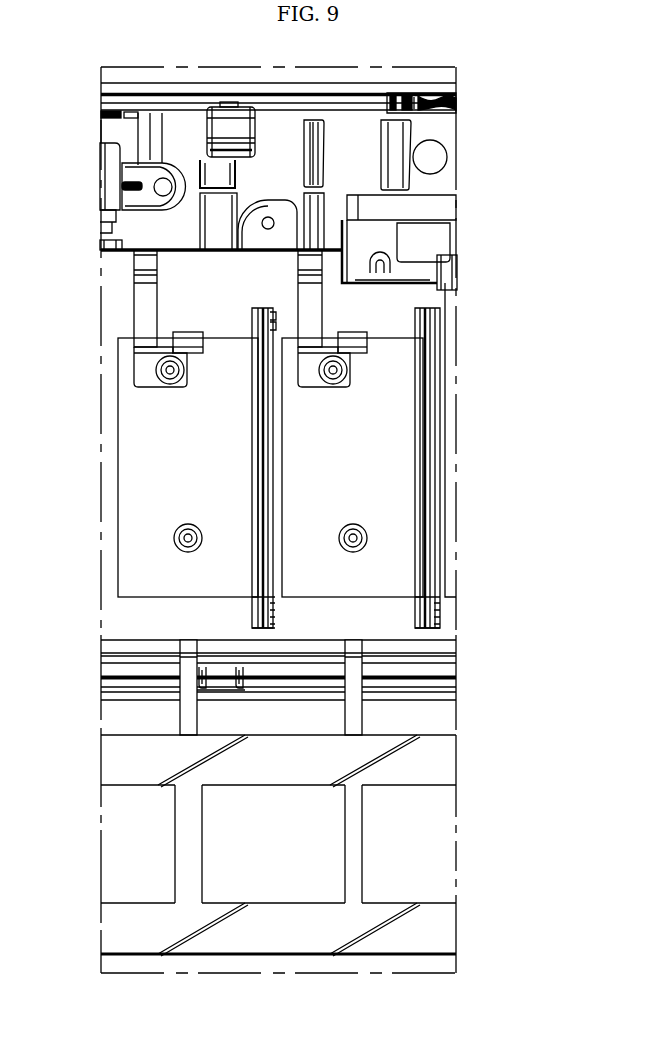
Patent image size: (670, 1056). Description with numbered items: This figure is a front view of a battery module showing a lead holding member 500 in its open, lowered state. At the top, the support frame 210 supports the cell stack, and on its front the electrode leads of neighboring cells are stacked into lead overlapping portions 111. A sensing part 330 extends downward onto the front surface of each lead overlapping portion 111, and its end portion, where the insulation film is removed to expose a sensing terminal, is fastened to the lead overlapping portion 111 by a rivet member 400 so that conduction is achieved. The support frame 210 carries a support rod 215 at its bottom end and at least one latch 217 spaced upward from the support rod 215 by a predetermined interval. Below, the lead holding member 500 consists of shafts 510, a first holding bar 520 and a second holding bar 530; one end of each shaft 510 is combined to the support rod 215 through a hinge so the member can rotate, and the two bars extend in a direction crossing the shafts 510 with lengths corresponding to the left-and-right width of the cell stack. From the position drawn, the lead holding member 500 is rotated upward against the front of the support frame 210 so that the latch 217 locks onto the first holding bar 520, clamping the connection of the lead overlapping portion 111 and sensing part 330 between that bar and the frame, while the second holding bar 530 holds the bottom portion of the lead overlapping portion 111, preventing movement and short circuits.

The lead overlapping portion 111 is at (400, 460).
The support frame 210 is at (118, 619).
The support rod 215 is at (445, 650).
The latch 217 is at (352, 340).
The sensing part 330 is at (312, 308).
The rivet member 400 is at (340, 372).
The lead holding member 500 is at (340, 806).
The shaft 510 is at (353, 715).
The first holding bar 520 is at (309, 938).
The second holding bar 530 is at (445, 763).